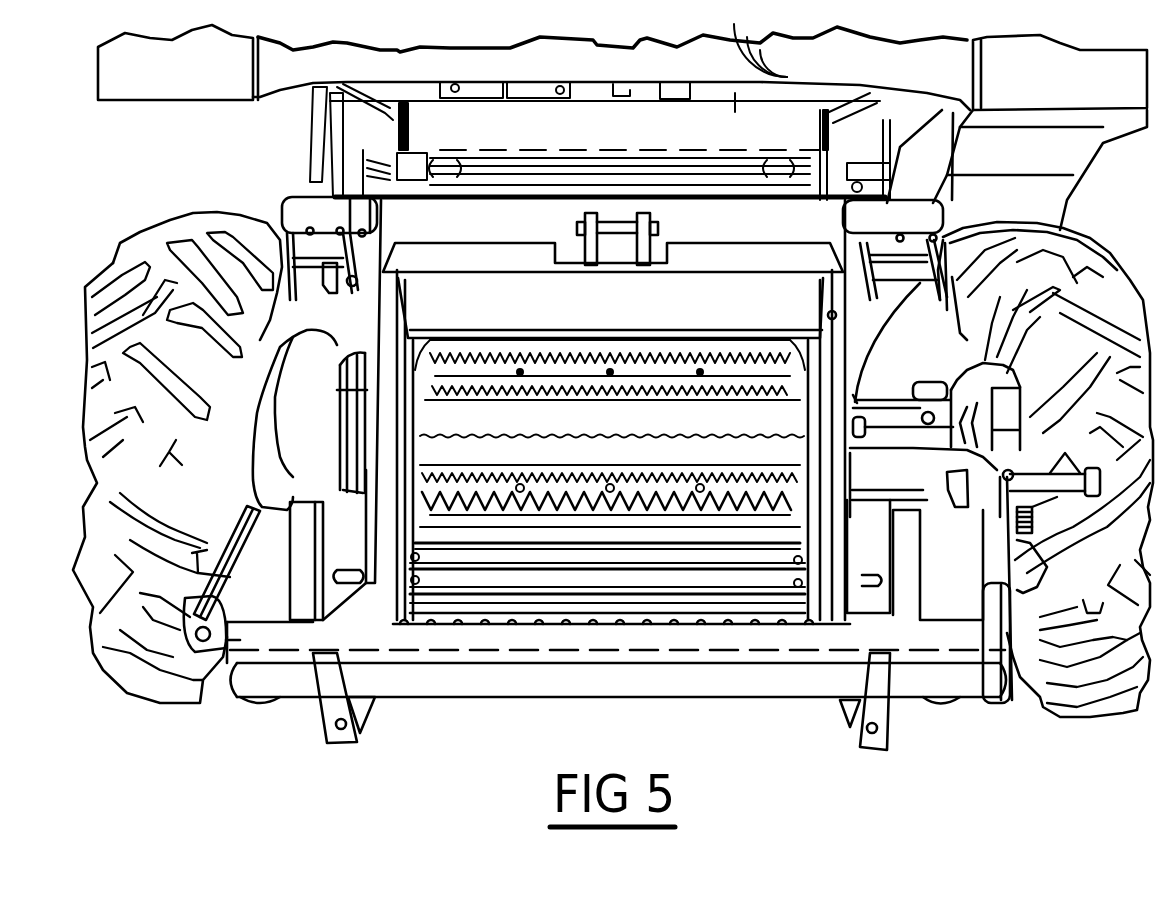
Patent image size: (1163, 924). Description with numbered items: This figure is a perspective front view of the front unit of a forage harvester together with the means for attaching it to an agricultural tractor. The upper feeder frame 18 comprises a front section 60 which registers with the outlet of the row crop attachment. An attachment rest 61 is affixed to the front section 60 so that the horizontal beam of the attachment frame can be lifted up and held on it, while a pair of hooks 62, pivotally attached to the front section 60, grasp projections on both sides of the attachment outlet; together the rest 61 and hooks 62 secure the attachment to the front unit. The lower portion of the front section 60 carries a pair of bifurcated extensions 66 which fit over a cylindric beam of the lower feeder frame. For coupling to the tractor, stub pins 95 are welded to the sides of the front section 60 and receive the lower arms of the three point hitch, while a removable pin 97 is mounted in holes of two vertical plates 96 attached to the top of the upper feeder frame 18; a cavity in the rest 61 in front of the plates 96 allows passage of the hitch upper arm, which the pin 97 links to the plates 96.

The upper feeder frame 18 is at (368, 305).
The front section 60 is at (840, 377).
The attachment rest 61 is at (740, 273).
The hooks 62 is at (228, 612).
The bifurcated extensions 66 is at (366, 714).
The stub pins 95 is at (343, 568).
The vertical plates 96 is at (582, 240).
The removable pin 97 is at (622, 233).